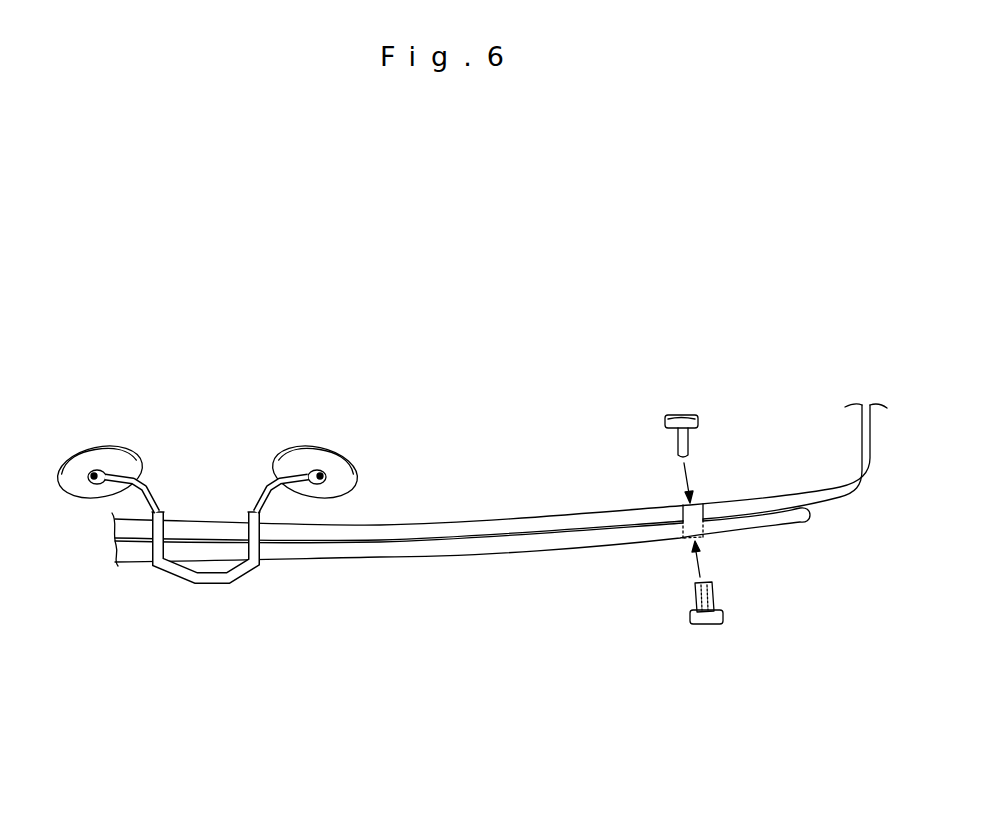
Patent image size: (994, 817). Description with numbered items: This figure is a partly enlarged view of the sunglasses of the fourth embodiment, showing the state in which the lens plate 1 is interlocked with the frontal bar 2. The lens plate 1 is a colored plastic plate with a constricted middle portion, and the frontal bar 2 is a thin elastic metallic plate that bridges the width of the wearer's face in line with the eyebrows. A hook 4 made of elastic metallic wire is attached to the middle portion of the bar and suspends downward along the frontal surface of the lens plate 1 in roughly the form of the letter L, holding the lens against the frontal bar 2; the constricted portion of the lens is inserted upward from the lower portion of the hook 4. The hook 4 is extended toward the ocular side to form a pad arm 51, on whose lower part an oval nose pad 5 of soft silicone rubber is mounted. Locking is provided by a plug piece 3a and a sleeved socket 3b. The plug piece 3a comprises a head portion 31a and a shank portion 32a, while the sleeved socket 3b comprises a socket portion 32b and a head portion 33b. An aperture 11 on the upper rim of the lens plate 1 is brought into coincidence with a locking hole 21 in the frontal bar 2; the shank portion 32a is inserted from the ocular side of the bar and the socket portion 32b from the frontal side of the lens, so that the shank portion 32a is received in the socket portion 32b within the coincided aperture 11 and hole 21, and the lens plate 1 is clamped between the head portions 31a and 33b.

The lens plate 1 is at (458, 552).
The frontal bar 2 is at (428, 523).
The locking hole 21 is at (680, 507).
The aperture 11 is at (678, 540).
The hook 4 is at (195, 583).
The nose pad 5 is at (93, 445).
The pad arm 51 is at (258, 505).
The plug piece 3a is at (679, 402).
The head portion 31a is at (667, 422).
The shank portion 32a is at (688, 433).
The sleeved socket 3b is at (729, 640).
The socket portion 32b is at (713, 590).
The head portion 33b is at (725, 615).